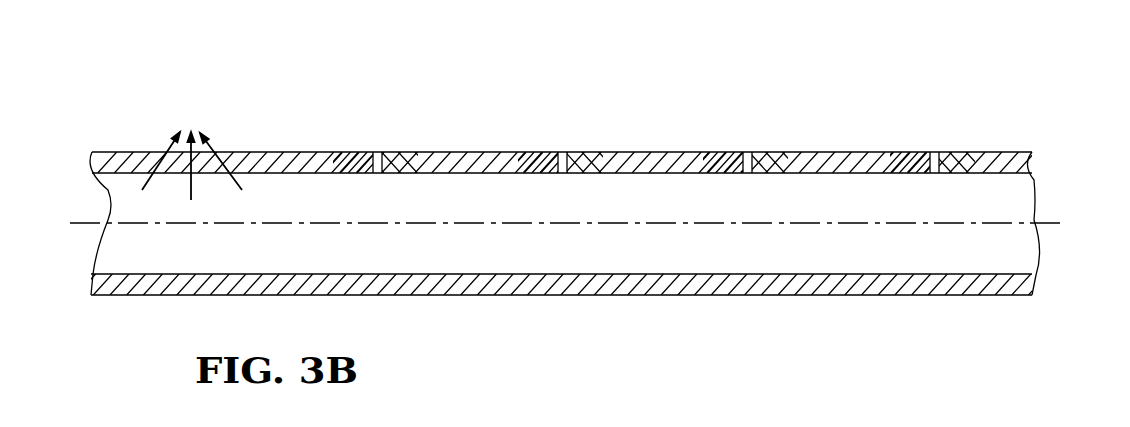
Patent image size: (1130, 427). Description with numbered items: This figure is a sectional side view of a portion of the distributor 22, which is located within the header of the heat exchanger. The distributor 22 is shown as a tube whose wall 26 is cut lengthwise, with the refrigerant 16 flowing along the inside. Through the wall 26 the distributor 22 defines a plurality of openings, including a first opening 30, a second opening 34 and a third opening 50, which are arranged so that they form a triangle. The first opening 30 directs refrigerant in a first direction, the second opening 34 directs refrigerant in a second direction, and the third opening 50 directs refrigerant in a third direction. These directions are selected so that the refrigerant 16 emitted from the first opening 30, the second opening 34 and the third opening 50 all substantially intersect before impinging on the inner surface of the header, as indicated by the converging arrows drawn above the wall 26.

The refrigerant 16 is at (190, 187).
The distributor 22 is at (591, 152).
The wall 26 is at (1008, 153).
The first opening 30 is at (537, 152).
The second opening 34 is at (590, 152).
The third opening 50 is at (560, 152).